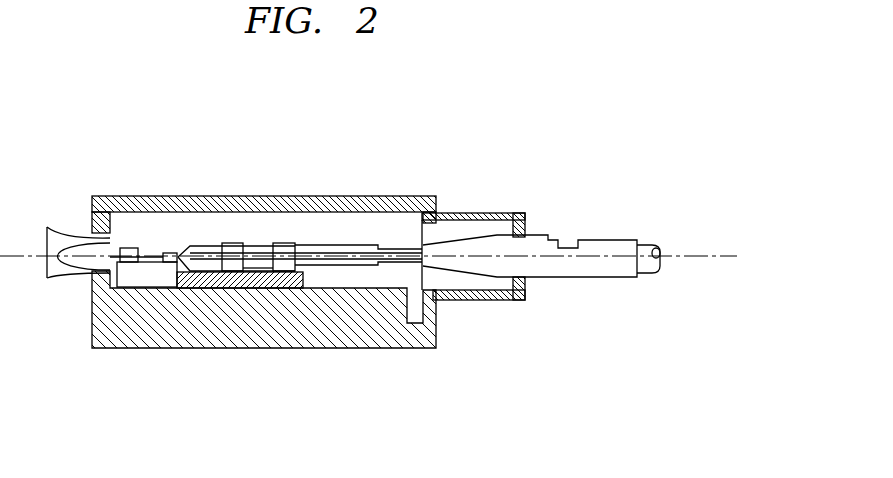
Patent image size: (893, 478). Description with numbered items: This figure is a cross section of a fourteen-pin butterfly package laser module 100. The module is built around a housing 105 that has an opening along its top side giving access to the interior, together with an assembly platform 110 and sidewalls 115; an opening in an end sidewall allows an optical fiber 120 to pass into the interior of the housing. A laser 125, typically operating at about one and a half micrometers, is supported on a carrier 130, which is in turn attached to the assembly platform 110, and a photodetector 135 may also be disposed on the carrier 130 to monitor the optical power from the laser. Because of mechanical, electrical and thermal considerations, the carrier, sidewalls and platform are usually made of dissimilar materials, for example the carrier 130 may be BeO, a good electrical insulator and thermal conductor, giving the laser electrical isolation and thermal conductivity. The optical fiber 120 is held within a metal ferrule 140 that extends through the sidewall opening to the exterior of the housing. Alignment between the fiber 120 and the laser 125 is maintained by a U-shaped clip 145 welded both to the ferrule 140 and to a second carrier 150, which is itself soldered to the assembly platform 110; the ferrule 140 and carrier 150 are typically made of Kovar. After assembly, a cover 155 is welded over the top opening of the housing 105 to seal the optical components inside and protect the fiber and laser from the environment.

The laser module 100 is at (531, 117).
The housing 105 is at (125, 179).
The assembly platform 110 is at (437, 343).
The sidewalls 115 is at (347, 220).
The optical fiber 120 is at (181, 253).
The laser 125 is at (173, 251).
The carrier 130 is at (157, 286).
The photodetector 135 is at (130, 260).
The metal ferrule 140 is at (322, 244).
The U-shaped clip 145 is at (286, 259).
The carrier 150 is at (228, 281).
The cover 155 is at (413, 196).